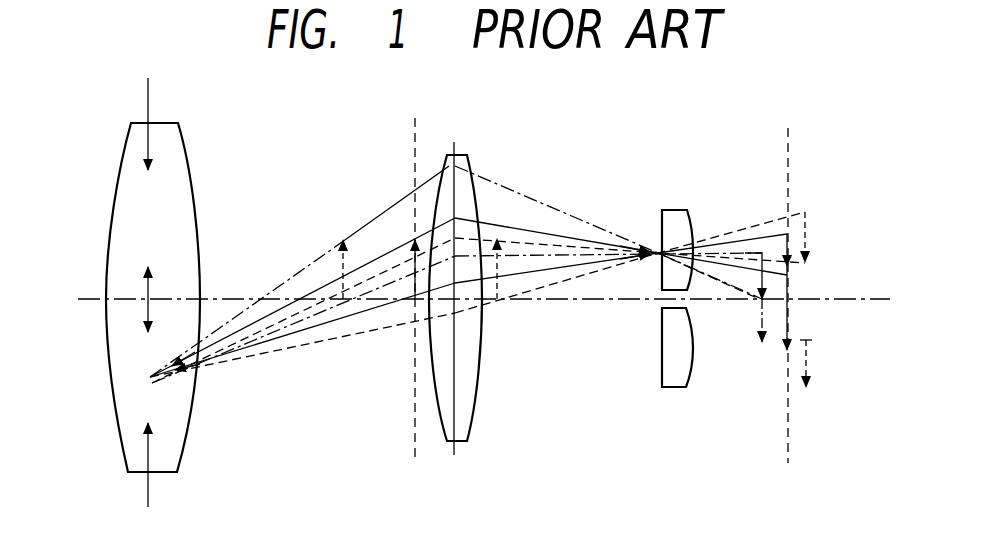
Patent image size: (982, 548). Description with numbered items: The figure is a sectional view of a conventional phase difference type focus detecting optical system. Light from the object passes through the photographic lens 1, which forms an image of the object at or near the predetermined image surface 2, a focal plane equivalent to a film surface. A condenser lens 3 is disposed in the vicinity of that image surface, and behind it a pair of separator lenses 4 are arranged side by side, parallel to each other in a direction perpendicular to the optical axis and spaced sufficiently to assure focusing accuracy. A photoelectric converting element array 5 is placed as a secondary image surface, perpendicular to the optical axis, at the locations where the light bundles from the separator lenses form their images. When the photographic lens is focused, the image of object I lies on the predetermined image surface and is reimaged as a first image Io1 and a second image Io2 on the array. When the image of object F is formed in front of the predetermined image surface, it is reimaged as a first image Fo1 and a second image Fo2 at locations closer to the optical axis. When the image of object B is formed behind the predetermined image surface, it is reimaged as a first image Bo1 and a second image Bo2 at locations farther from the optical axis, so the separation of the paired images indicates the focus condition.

The photographic lens 1 is at (187, 148).
The predetermined image surface 2 is at (412, 150).
The condenser lens 3 is at (473, 186).
The pair of separator lenses 4 is at (672, 210).
The photoelectric converting element array 5 is at (790, 148).
The image of object F is at (332, 252).
The image of object I is at (403, 300).
The image of object B is at (500, 270).
The first image of object I Io1 is at (768, 252).
The first image of object B Bo1 is at (807, 235).
The first image of object F Fo1 is at (752, 265).
The second image of object F Fo2 is at (762, 345).
The second image of object I Io2 is at (787, 338).
The second image of object B Bo2 is at (806, 340).